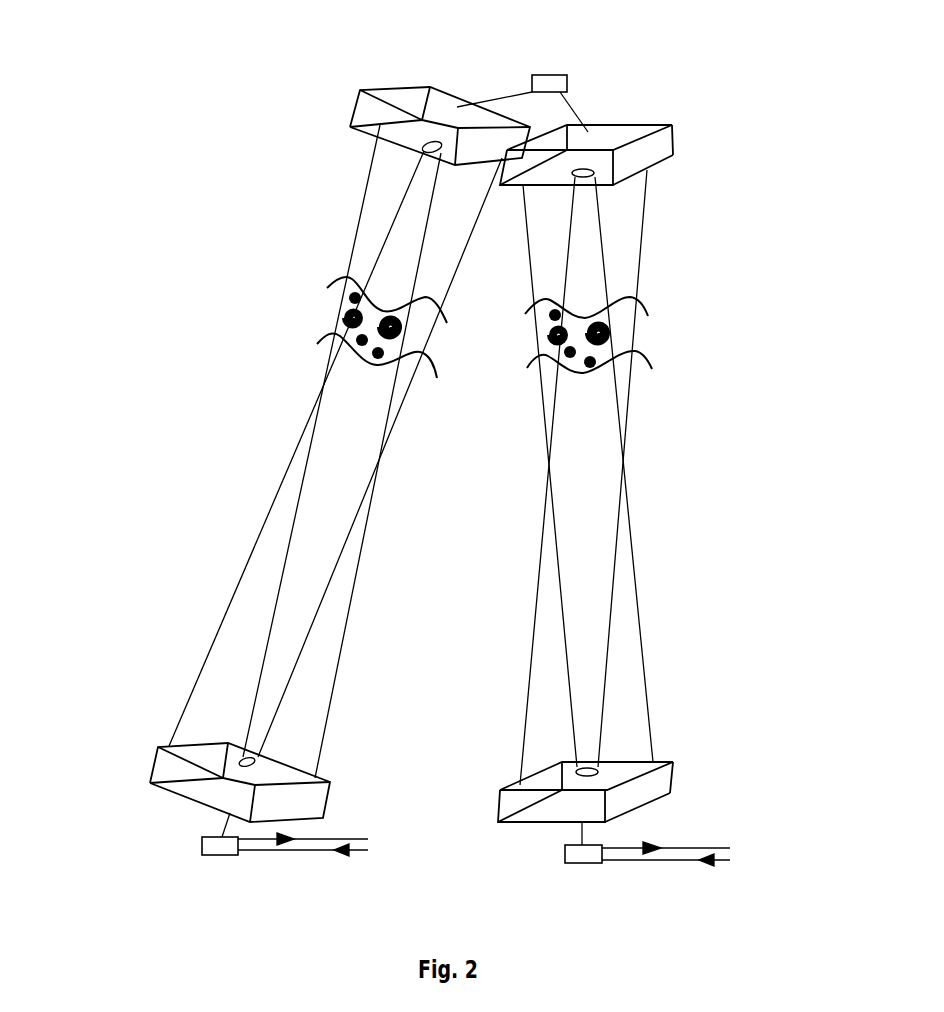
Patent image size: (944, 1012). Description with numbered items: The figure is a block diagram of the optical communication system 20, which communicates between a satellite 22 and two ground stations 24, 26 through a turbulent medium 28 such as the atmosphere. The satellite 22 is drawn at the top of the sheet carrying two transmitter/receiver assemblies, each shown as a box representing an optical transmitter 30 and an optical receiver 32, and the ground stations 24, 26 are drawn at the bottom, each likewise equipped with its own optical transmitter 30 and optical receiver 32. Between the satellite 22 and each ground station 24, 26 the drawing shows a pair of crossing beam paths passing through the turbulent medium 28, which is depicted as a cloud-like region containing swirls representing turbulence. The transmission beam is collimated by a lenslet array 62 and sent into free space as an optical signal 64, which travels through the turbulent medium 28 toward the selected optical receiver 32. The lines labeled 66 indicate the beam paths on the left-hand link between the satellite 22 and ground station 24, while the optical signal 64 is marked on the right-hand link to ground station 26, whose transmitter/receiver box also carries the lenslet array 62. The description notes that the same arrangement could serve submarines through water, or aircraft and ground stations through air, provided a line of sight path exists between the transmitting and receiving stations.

The optical communication system 20 is at (605, 92).
The satellite 22 is at (555, 75).
The ground station 24 is at (238, 900).
The ground station 26 is at (590, 900).
The turbulent medium 28 is at (340, 308).
The optical transmitter 30 is at (454, 438).
The optical receiver 32 is at (454, 438).
The lenslet array 62 is at (665, 760).
The optical signal 64 is at (590, 278).
The uplink optical beam 66 is at (332, 698).